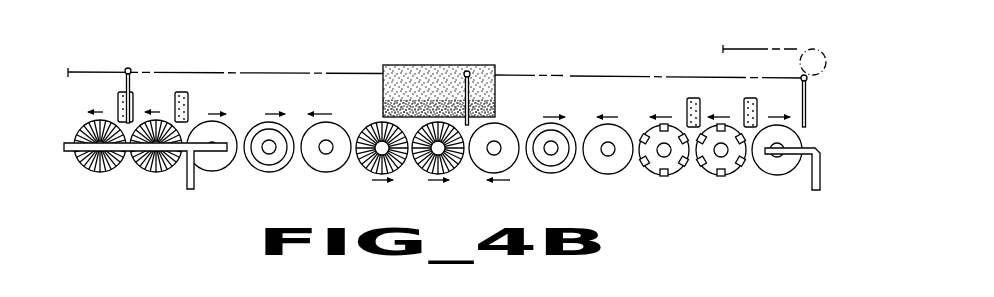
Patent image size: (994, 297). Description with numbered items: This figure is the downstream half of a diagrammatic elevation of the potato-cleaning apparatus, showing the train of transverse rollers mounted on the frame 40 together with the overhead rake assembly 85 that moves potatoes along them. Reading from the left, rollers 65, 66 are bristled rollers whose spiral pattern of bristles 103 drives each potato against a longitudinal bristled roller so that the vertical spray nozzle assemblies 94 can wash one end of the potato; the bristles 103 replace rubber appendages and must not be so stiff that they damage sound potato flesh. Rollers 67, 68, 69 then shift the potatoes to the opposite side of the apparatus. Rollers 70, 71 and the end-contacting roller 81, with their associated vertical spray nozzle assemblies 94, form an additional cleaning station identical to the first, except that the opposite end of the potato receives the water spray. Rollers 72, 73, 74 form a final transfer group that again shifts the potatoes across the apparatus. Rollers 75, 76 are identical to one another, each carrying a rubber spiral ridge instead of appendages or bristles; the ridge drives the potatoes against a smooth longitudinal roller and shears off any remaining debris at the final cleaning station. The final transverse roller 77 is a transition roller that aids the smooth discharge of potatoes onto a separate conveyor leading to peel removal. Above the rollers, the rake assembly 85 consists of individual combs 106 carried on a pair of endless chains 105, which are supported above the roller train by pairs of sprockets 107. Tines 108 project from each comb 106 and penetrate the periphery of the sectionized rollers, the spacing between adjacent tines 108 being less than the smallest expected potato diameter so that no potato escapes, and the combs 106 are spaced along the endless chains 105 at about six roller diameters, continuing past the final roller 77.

The frame 40 is at (817, 148).
The roller 65 is at (82, 124).
The roller 66 is at (170, 174).
The roller 67 is at (225, 166).
The roller 68 is at (271, 173).
The roller 69 is at (331, 172).
The roller 70 is at (367, 172).
The roller 71 is at (426, 170).
The roller 72 is at (484, 170).
The roller 73 is at (540, 170).
The roller 74 is at (602, 169).
The roller 75 is at (655, 175).
The roller 76 is at (713, 175).
The final transverse roller 77 is at (777, 175).
The roller 81 is at (383, 65).
The rake assembly 85 is at (766, 43).
The vertical spray nozzle assembly 94 is at (133, 96).
The bristles 103 is at (99, 172).
The endless chain 105 is at (572, 75).
The comb 106 is at (469, 71).
The sprocket 107 is at (800, 46).
The tine 108 is at (125, 70).